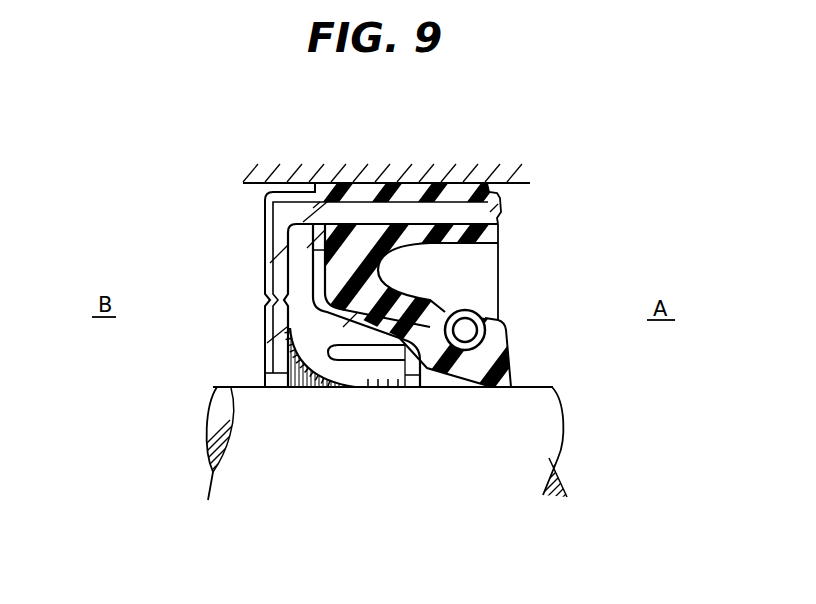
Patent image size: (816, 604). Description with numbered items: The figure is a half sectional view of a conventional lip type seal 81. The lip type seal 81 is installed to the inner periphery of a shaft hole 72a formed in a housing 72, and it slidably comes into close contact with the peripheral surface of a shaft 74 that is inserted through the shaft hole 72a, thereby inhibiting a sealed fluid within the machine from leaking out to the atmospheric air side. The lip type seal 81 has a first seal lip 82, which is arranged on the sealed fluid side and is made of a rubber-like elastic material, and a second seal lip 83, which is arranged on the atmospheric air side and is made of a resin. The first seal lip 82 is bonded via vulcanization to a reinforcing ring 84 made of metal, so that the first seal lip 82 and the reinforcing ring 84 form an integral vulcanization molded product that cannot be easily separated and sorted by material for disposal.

The housing 72 is at (523, 172).
The shaft hole 72a is at (255, 198).
The shaft 74 is at (485, 470).
The lip type seal 81 is at (406, 348).
The first seal lip 82 is at (460, 360).
The second seal lip 83 is at (360, 363).
The reinforcing ring 84 is at (282, 277).